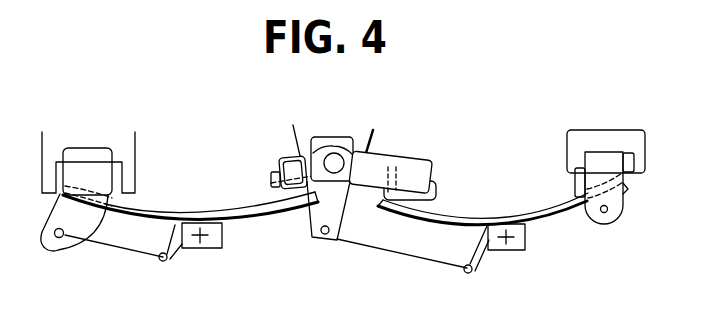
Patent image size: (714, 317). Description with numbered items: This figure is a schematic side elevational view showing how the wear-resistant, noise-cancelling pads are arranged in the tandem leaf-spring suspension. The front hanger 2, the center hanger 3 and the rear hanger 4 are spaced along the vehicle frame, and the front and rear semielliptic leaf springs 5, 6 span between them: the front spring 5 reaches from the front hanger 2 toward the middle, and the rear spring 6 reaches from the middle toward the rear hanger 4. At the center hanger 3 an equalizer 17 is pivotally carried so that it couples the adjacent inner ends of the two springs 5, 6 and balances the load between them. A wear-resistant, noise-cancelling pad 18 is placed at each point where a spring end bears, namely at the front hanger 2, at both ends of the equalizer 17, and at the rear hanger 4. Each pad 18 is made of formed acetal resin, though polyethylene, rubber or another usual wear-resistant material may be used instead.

The front hanger 2 is at (58, 238).
The center hanger 3 is at (316, 241).
The rear hanger 4 is at (614, 212).
The front semielliptic leaf spring 5 is at (267, 220).
The rear semielliptic leaf spring 6 is at (558, 218).
The equalizer 17 is at (386, 162).
The wear-resistant, noise-cancelling pad 18 is at (124, 176).